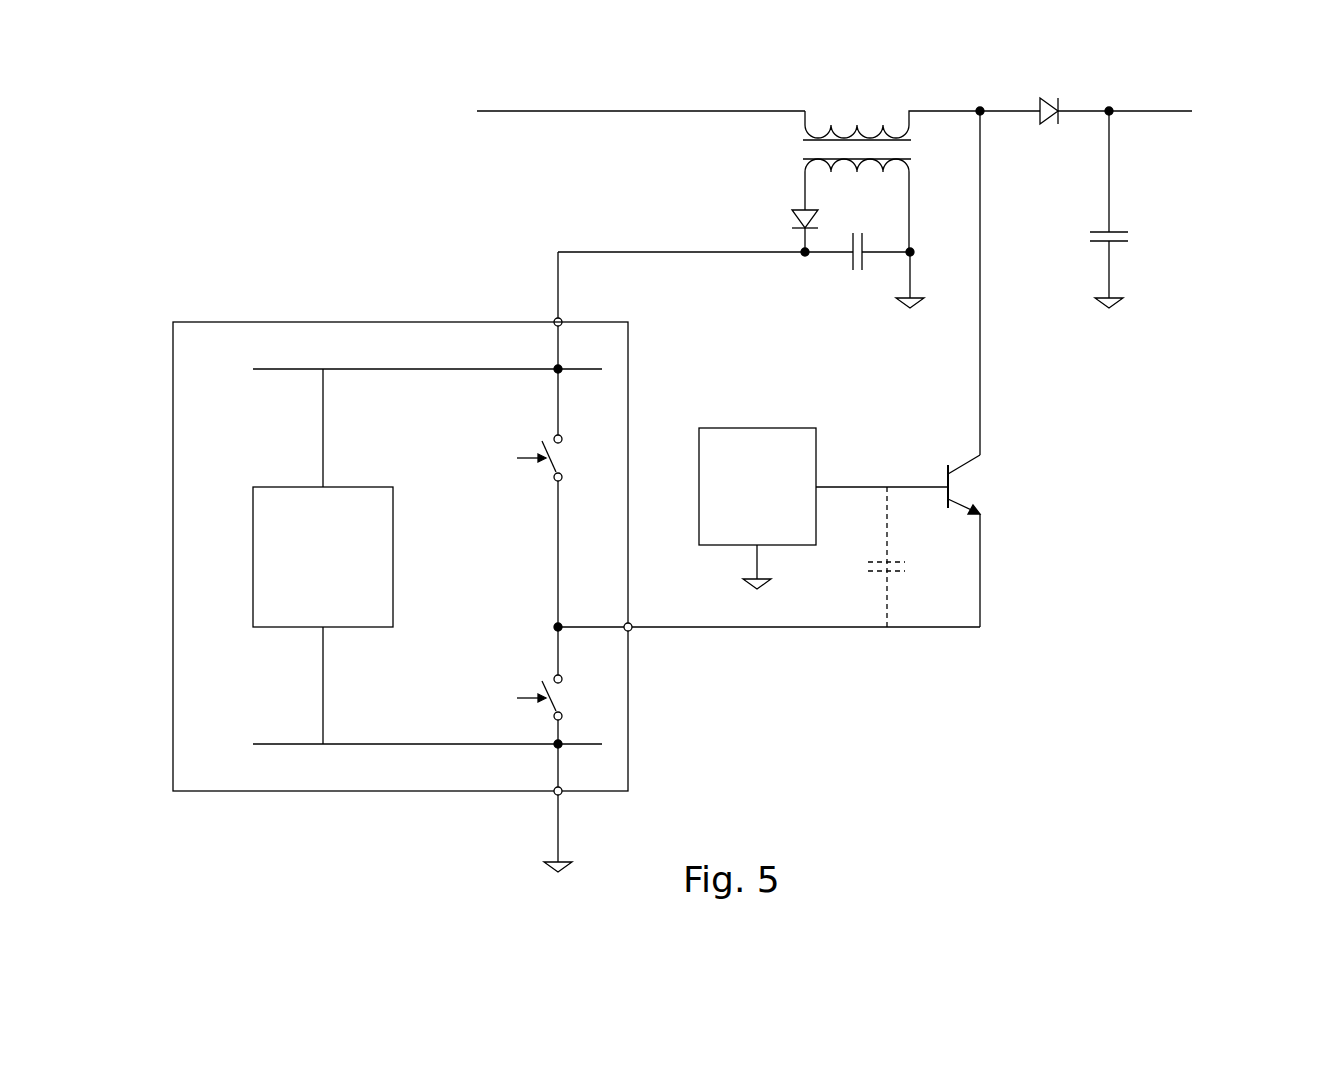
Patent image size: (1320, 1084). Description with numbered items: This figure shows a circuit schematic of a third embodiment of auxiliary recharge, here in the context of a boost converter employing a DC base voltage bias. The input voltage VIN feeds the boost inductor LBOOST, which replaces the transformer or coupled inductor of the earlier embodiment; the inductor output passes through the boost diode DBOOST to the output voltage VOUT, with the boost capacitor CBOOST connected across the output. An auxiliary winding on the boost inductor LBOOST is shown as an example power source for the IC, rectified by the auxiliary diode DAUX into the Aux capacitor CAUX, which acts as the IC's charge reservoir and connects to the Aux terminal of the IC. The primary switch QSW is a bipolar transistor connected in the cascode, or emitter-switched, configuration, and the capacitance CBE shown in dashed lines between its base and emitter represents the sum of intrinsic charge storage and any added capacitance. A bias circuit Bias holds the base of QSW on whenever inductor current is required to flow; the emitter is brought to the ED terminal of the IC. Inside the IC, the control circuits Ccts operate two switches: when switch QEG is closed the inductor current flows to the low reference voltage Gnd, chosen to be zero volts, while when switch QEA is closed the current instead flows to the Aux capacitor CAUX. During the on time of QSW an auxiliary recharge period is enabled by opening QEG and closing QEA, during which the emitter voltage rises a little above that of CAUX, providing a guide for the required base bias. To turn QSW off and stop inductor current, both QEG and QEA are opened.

The input voltage VIN is at (619, 113).
The boost inductor LBOOST is at (891, 164).
The boost diode DBOOST is at (1044, 126).
The output voltage VOUT is at (1176, 113).
The boost output capacitor CBOOST is at (1149, 209).
The auxiliary diode DAUX is at (770, 225).
The Aux capacitor CAUX is at (862, 270).
The Aux terminal Aux is at (652, 289).
The IC controller IC is at (400, 556).
The control circuits Ccts is at (323, 556).
The switch QEA is at (524, 476).
The switch QEG is at (524, 683).
The low reference voltage Gnd is at (533, 808).
The ED terminal ED is at (769, 643).
The bias circuit Bias is at (823, 508).
The primary switch QSW is at (985, 541).
The base-emitter capacitance CBE is at (910, 557).